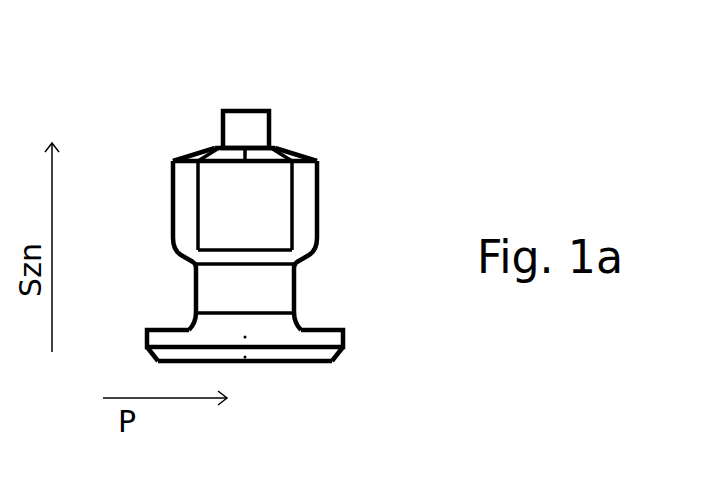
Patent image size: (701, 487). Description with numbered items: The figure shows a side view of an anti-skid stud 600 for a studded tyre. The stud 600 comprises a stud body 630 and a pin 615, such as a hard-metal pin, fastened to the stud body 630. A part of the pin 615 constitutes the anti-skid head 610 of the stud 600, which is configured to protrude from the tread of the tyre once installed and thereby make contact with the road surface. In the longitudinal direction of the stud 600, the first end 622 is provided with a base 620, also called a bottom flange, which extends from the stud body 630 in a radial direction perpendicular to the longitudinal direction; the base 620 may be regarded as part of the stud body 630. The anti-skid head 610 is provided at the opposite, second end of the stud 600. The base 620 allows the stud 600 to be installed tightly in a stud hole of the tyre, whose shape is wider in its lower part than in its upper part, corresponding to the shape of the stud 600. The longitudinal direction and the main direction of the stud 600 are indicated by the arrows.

The anti-skid head 610 is at (214, 109).
The pin 615 is at (248, 125).
The anti-skid stud 600 is at (250, 197).
The stud body 630 is at (300, 203).
The base 620 is at (325, 337).
The first end 622 is at (248, 372).